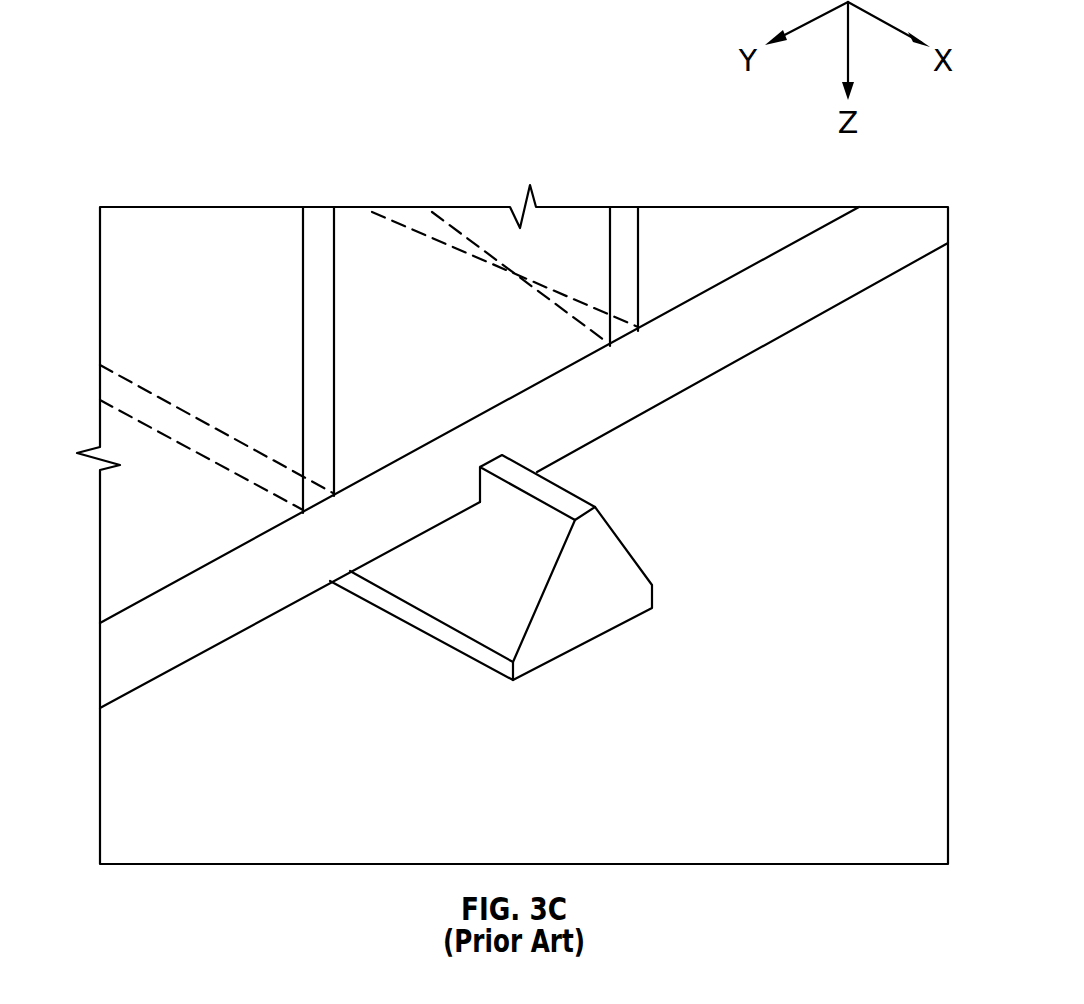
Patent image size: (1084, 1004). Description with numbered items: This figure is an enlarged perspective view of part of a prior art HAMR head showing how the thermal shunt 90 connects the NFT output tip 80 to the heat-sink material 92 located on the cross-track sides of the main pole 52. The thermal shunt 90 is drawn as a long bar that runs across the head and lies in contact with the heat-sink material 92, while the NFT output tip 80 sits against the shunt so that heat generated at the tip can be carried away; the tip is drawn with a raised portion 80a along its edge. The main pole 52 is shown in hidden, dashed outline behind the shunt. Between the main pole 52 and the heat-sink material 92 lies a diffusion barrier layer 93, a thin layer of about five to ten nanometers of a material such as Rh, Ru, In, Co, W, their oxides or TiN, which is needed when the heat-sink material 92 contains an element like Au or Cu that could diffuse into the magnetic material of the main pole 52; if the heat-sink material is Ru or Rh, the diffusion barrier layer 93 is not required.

The main pole 52 is at (425, 283).
The NFT output tip 80 is at (491, 567).
The rib of block 80a is at (575, 515).
The thermal shunt 90 is at (713, 348).
The heat-sink material 92 is at (738, 227).
The diffusion barrier layer 93 is at (322, 223).